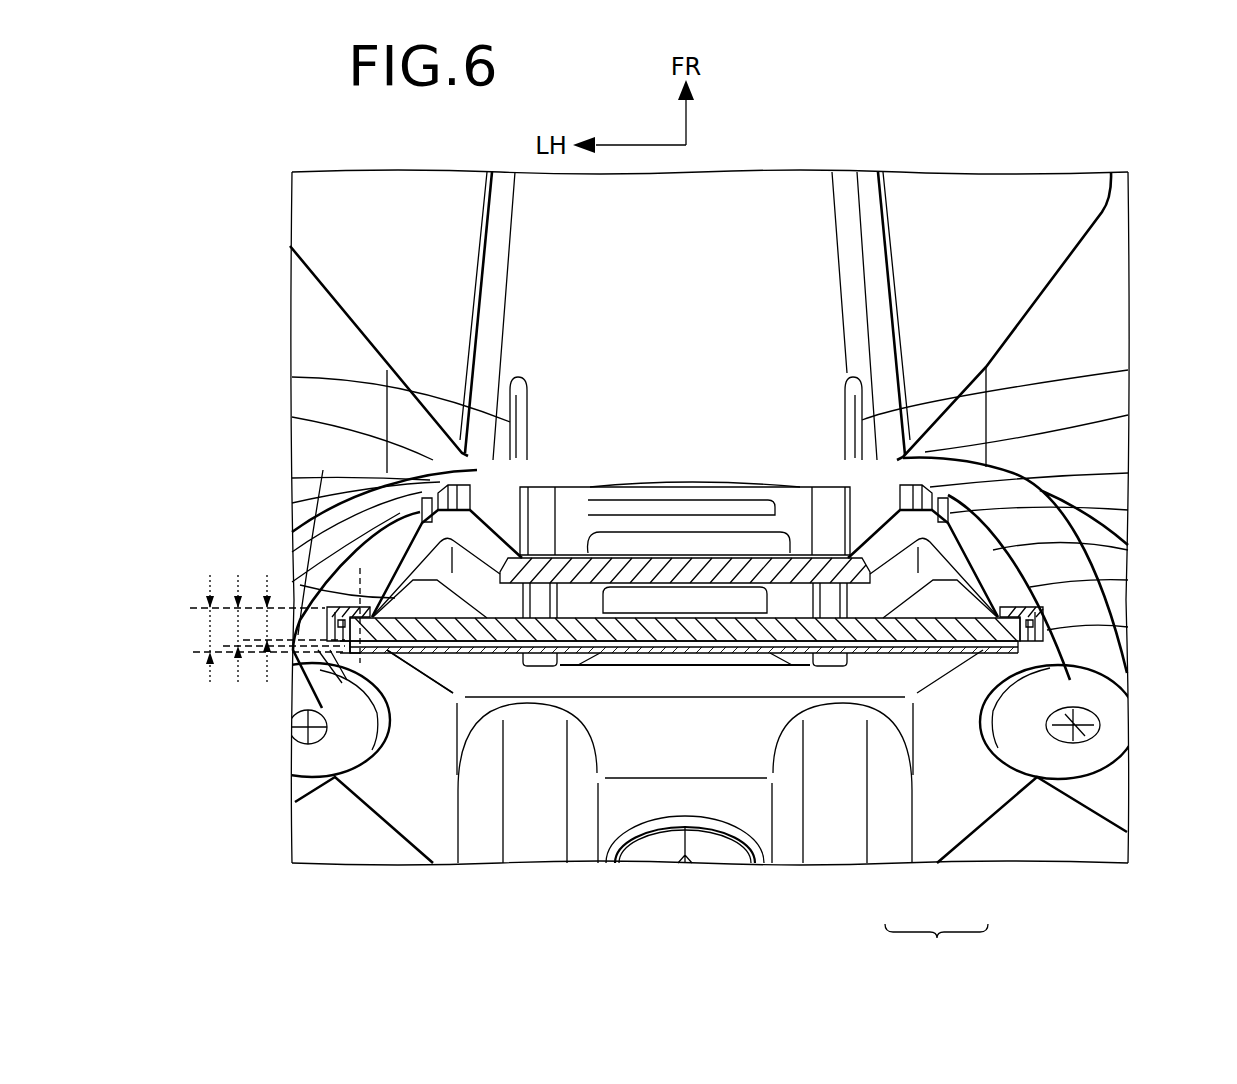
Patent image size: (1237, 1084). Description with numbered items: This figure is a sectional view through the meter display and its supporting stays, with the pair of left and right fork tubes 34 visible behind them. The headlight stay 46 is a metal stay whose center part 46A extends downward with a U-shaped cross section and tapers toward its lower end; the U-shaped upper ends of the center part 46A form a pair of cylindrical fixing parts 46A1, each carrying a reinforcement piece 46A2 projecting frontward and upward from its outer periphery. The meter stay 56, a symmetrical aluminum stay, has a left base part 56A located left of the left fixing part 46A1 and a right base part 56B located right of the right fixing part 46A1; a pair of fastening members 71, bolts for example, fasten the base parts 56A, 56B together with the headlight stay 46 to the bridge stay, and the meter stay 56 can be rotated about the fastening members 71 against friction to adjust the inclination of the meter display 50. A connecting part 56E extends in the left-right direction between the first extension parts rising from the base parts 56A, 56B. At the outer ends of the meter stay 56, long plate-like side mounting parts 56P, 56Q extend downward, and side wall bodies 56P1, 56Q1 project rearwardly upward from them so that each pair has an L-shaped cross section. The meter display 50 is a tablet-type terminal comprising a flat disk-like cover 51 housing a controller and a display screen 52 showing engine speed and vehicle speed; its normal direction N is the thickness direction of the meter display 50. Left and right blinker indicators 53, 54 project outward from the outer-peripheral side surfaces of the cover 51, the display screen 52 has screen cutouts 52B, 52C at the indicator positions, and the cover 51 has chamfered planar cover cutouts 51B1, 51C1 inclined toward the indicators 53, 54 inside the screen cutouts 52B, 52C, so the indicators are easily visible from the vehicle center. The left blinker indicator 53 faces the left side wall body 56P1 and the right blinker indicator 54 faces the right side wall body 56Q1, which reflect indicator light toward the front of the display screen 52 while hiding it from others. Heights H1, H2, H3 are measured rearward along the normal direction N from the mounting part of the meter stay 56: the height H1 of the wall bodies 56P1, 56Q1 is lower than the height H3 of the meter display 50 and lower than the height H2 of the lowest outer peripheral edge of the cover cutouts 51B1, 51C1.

The fork tube 34 is at (313, 333).
The headlight stay 46 is at (893, 287).
The center part 46A is at (664, 318).
The fixing part 46A1 is at (487, 497).
The reinforcement piece 46A2 is at (514, 412).
The fastening member 71 is at (335, 512).
The meter stay 56 is at (995, 558).
The left base part 56A is at (378, 528).
The right base part 56B is at (945, 490).
The connecting part 56E is at (668, 570).
The side mounting part 56P is at (333, 606).
The side wall body 56P1 is at (326, 620).
The side mounting part 56Q is at (1045, 607).
The side wall body 56Q1 is at (1040, 627).
The right blinker indicator 54 is at (962, 630).
The meter display 50 is at (936, 941).
The cover 51 is at (968, 655).
The cover cutout 51B1 is at (355, 658).
The cover cutout 51C1 is at (1045, 693).
The display screen 52 is at (903, 655).
The screen cutout 52B is at (347, 660).
The screen cutout 52C is at (1095, 735).
The left blinker indicator 53 is at (347, 649).
The normal direction N is at (398, 598).
The height of wall bodies H1 is at (267, 618).
The height of cover cutouts H2 is at (238, 622).
The height of meter display H3 is at (210, 627).